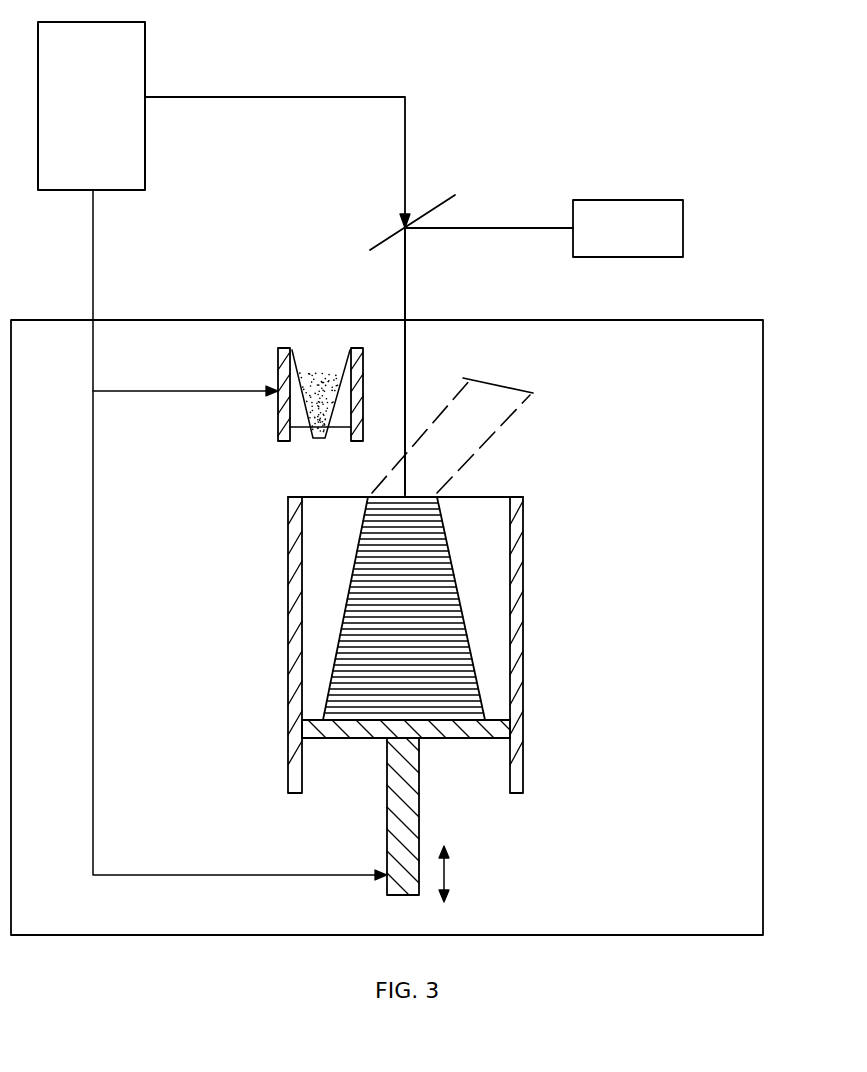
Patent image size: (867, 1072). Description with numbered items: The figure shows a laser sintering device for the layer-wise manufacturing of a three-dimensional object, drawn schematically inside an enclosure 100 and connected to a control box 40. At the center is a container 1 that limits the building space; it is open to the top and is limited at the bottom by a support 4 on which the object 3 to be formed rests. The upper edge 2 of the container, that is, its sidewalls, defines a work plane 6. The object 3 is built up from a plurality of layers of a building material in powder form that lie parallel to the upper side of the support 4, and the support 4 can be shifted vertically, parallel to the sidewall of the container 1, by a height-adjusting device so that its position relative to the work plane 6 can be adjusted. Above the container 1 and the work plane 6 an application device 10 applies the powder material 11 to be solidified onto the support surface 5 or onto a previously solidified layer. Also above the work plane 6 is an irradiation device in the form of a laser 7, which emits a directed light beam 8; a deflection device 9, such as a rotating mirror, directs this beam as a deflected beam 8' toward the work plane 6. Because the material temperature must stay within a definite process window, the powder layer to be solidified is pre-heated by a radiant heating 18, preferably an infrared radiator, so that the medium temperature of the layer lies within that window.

The container 1 is at (523, 583).
The upper edge 2 is at (520, 495).
The object 3 is at (478, 659).
The support 4 is at (424, 758).
The support surface 5 is at (490, 718).
The work plane 6 is at (464, 495).
The laser 7 is at (616, 200).
The light beam 8 is at (489, 250).
The deflected beam 8' is at (431, 354).
The deflection device 9 is at (447, 203).
The application device 10 is at (278, 366).
The powder material 11 is at (318, 375).
The radiant heating 18 is at (533, 393).
The control unit 40 is at (145, 47).
The process chamber 100 is at (763, 395).